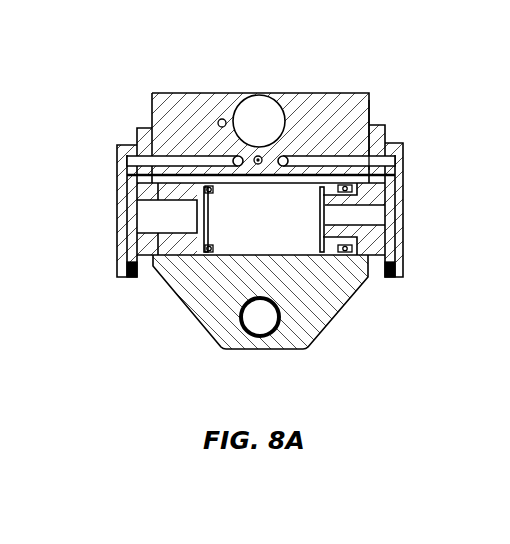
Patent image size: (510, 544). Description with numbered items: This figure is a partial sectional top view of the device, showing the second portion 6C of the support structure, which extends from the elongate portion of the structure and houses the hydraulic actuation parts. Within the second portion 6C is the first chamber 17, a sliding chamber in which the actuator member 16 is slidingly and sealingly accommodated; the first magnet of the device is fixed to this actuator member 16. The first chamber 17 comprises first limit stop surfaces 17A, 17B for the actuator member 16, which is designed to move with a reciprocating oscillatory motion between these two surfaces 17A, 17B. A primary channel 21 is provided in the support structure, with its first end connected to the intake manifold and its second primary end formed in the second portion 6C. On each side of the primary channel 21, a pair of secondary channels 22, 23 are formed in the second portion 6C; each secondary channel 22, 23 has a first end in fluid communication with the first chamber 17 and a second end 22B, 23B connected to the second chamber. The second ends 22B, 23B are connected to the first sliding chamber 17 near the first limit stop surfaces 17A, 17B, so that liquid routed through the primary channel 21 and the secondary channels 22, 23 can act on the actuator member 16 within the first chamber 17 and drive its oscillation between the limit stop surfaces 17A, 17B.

The first chamber 17 is at (190, 237).
The first limit stop surface 17A is at (157, 190).
The first limit stop surface 17B is at (360, 186).
The primary channel 21 is at (257, 156).
The secondary channel 22 is at (197, 158).
The secondary channel 23 is at (318, 156).
The actuator member 16 is at (291, 232).
The second end of secondary channel 22B is at (164, 221).
The second end of secondary channel 23B is at (352, 220).
The second portion 6C is at (222, 313).